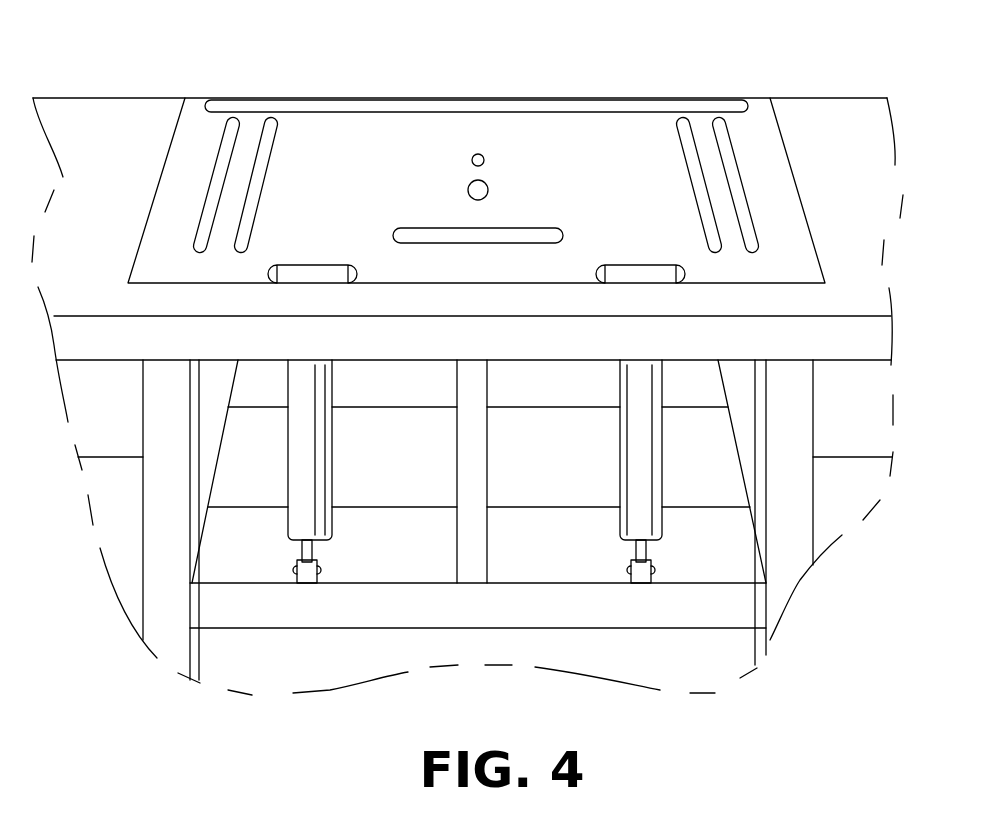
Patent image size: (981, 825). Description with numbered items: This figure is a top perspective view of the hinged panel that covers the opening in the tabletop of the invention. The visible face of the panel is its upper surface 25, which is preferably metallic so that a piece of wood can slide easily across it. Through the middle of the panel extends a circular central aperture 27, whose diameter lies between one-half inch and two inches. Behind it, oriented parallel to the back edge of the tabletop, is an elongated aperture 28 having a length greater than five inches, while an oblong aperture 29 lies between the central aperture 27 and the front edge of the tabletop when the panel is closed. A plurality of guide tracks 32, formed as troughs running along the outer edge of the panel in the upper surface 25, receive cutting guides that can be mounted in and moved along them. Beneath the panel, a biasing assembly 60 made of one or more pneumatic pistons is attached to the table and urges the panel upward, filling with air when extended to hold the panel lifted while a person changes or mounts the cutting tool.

The upper surface 25 is at (558, 173).
The central aperture 27 is at (470, 183).
The elongated aperture 28 is at (413, 232).
The oblong aperture 29 is at (484, 156).
The guide tracks 32 is at (220, 107).
The biasing assembly 60 is at (287, 528).